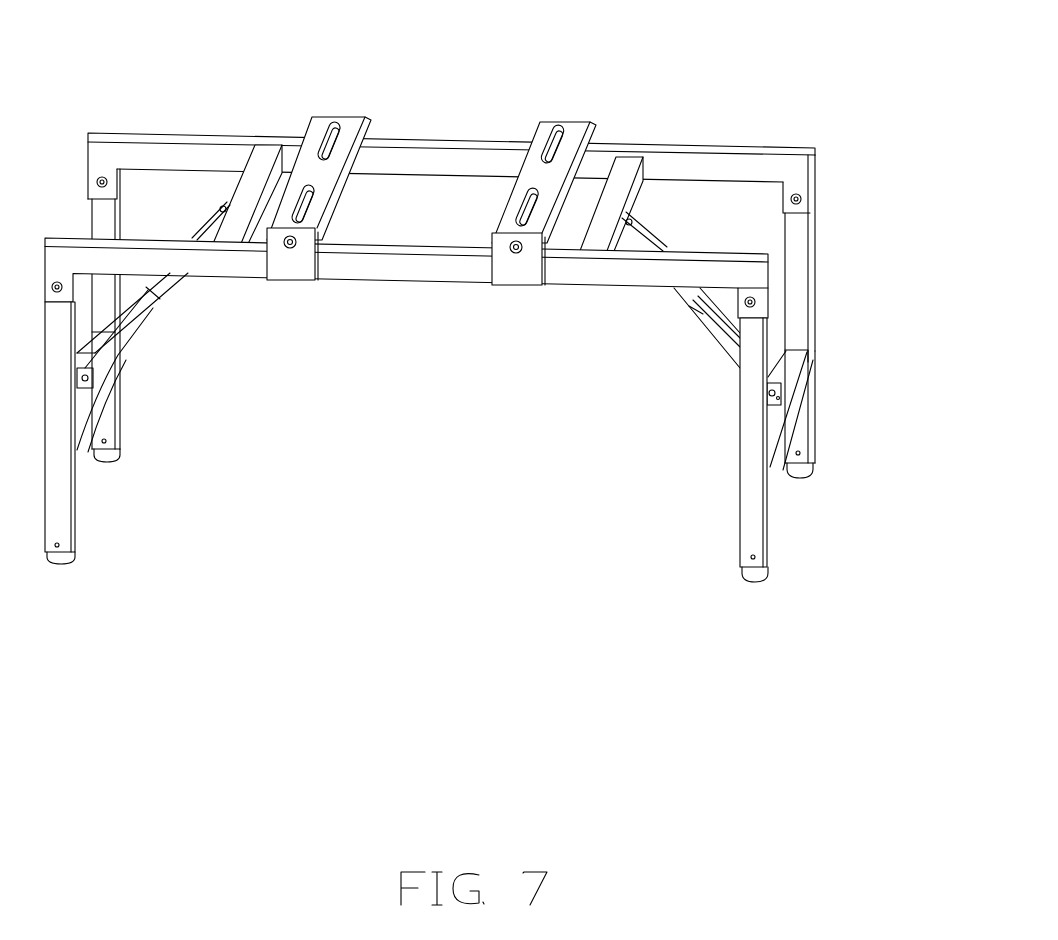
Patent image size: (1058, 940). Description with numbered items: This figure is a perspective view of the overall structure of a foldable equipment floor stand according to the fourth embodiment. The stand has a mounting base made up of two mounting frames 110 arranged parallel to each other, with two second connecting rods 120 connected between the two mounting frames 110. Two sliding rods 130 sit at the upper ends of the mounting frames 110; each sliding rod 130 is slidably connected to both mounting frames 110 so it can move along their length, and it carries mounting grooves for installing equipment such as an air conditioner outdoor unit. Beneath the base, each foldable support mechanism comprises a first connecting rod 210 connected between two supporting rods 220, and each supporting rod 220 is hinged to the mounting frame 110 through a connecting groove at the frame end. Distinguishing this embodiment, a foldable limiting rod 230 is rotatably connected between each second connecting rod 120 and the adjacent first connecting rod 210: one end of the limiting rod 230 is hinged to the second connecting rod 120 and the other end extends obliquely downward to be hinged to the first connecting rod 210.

The mounting frame 110 is at (717, 167).
The second connecting rod 120 is at (616, 168).
The sliding rod 130 is at (308, 116).
The first connecting rod 210 is at (807, 378).
The supporting rod 220 is at (803, 247).
The foldable limiting rod 230 is at (693, 327).